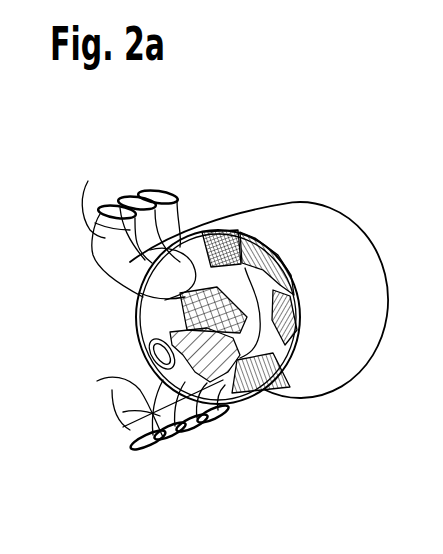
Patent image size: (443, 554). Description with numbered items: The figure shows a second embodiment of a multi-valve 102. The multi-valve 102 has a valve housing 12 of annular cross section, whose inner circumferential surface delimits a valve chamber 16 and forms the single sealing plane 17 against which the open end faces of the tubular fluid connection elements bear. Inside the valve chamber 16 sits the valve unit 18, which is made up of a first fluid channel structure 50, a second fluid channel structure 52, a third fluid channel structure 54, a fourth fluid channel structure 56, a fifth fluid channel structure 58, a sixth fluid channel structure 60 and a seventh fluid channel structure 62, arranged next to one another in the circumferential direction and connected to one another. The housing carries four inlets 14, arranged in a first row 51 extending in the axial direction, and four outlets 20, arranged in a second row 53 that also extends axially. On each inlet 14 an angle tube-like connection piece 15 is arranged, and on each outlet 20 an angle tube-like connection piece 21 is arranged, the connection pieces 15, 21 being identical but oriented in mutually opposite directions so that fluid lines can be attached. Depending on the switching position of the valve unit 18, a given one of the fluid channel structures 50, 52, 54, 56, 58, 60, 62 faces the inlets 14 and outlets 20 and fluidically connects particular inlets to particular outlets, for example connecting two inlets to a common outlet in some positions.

The multi-valve 102 is at (355, 181).
The valve housing 12 is at (340, 250).
The inlet 14 is at (137, 195).
The connection piece 15 is at (88, 181).
The valve chamber 16 is at (239, 262).
The sealing plane 17 is at (140, 310).
The valve unit 18 is at (266, 230).
The outlet 20 is at (97, 381).
The connection piece 21 is at (122, 443).
The first fluid channel structure 50 is at (213, 226).
The first row 51 is at (191, 185).
The second fluid channel structure 52 is at (277, 248).
The second row 53 is at (170, 446).
The third fluid channel structure 54 is at (297, 322).
The fourth fluid channel structure 56 is at (256, 372).
The fifth fluid channel structure 58 is at (215, 406).
The sixth fluid channel structure 60 is at (140, 313).
The seventh fluid channel structure 62 is at (159, 191).